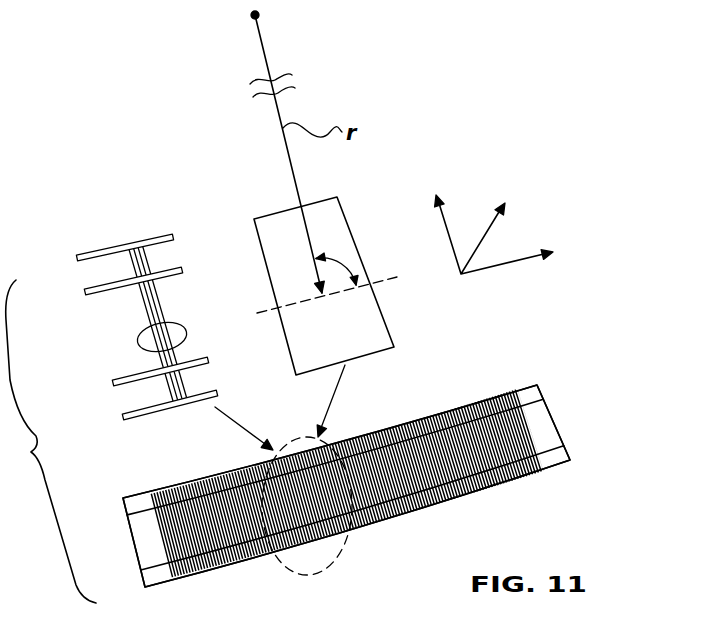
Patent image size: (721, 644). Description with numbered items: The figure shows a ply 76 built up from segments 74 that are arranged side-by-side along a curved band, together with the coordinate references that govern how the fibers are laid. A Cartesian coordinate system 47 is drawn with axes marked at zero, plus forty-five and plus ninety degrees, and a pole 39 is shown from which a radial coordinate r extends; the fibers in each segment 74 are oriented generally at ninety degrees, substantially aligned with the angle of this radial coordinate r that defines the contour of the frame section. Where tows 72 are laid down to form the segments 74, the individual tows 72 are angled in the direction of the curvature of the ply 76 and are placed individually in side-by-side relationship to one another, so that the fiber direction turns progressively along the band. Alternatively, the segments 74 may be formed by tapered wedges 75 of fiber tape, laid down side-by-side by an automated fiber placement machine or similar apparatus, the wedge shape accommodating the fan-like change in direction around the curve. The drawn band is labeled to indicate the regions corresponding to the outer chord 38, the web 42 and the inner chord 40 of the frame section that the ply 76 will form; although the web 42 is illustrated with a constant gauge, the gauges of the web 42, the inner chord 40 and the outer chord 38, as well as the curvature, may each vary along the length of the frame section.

The outer chord 38 is at (120, 406).
The pole 39 is at (237, 13).
The inner chord 40 is at (188, 248).
The web 42 is at (116, 357).
The Cartesian coordinate system 47 is at (562, 188).
The tows 72 is at (138, 333).
The segments 74 is at (367, 538).
The tapered wedges 75 is at (327, 222).
The ply 76 is at (452, 382).